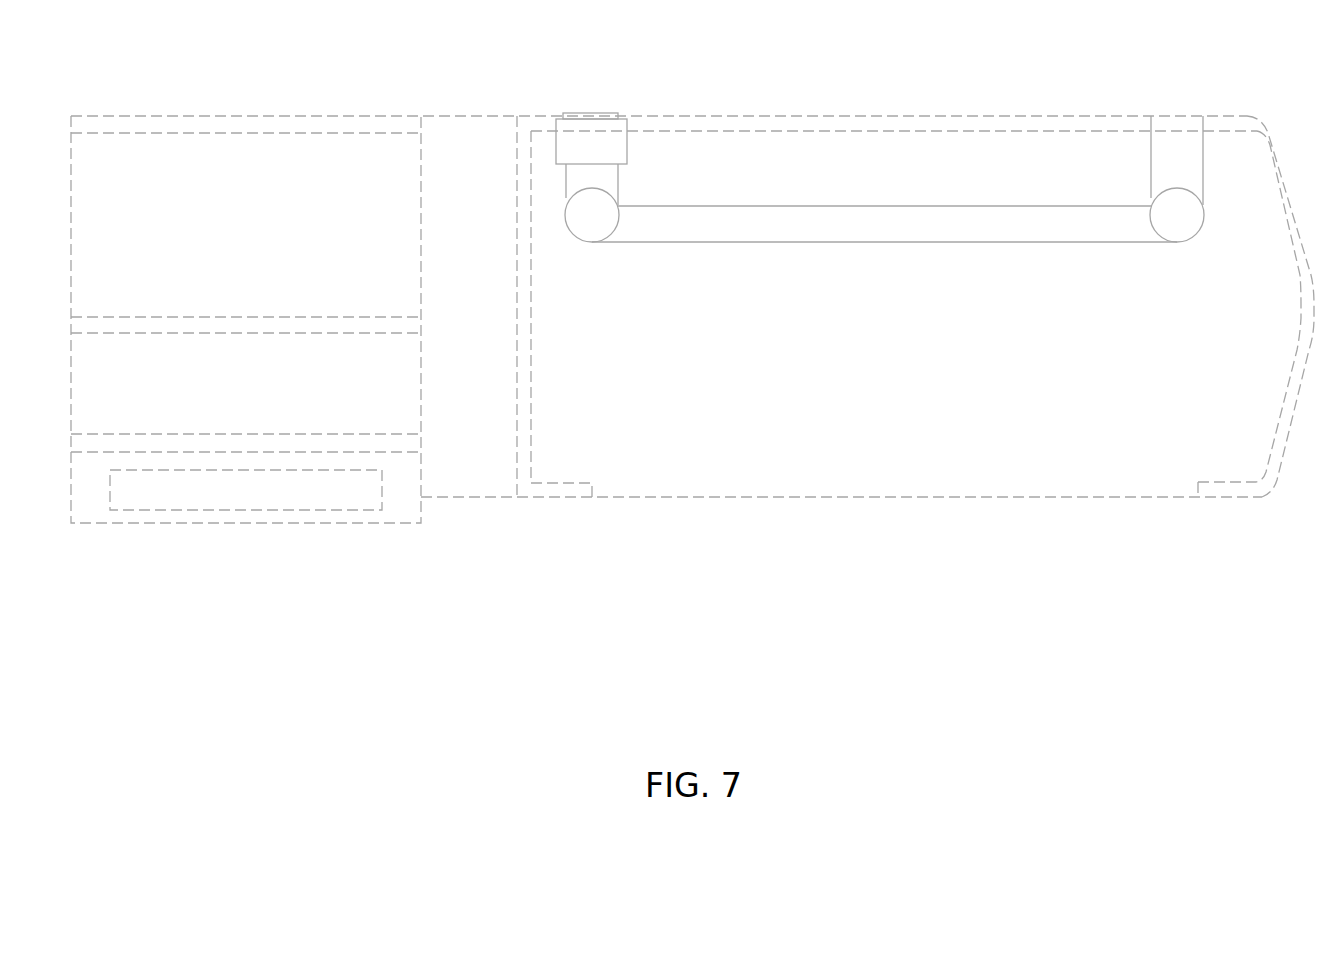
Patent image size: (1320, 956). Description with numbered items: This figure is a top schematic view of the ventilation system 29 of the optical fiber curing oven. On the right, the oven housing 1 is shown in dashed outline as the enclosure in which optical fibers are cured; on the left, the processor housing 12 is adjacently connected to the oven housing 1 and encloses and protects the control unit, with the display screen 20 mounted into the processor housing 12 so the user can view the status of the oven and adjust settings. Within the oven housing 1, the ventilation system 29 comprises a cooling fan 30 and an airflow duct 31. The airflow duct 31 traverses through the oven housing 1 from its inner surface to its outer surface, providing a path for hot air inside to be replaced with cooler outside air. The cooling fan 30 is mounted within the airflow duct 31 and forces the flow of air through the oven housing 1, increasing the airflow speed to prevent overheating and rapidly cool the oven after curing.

The oven housing 1 is at (1246, 118).
The processor housing 12 is at (218, 116).
The display screen 20 is at (257, 505).
The ventilation system 29 is at (880, 214).
The cooling fan 30 is at (627, 149).
The airflow duct 31 is at (880, 207).